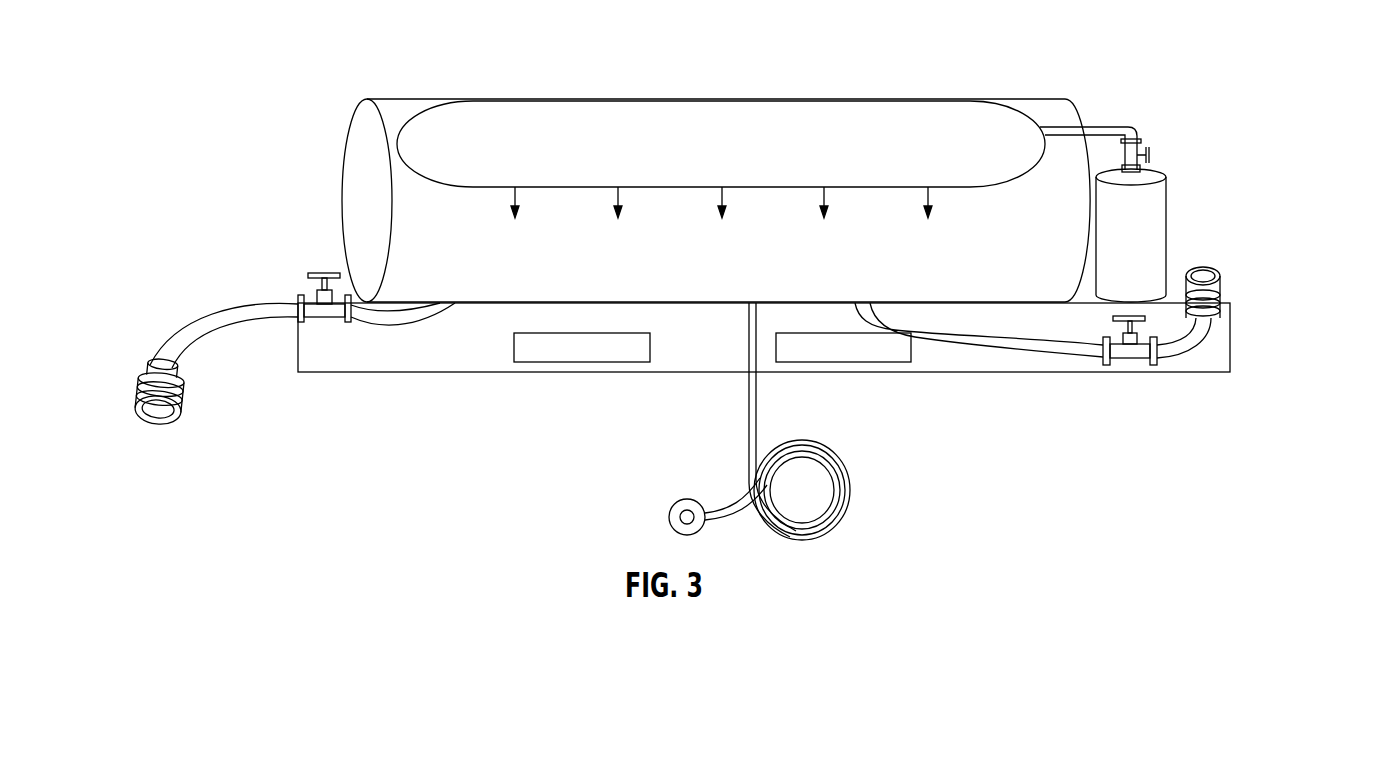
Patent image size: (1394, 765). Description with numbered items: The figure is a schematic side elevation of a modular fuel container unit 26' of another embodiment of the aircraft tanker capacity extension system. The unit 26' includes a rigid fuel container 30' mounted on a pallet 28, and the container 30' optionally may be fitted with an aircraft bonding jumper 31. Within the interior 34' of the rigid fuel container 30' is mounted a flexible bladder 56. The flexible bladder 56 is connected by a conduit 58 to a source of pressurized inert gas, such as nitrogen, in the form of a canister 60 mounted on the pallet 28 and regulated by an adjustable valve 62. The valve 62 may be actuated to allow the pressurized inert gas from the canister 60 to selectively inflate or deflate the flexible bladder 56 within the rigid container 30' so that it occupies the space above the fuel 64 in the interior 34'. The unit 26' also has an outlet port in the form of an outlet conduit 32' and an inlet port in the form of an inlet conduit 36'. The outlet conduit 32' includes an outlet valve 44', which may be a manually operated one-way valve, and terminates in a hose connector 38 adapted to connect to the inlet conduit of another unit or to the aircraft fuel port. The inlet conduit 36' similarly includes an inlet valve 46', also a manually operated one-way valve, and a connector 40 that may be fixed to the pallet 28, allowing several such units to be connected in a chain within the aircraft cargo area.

The modular fuel container unit 26' is at (1206, 184).
The pallet 28 is at (1222, 342).
The rigid fuel container 30' is at (721, 118).
The aircraft bonding jumper 31 is at (758, 423).
The outlet conduit 32' is at (224, 307).
The interior 34' is at (341, 200).
The inlet conduit 36' is at (1184, 370).
The hose connector 38 is at (142, 408).
The connector 40 is at (1217, 285).
The outlet valve 44' is at (365, 341).
The inlet valve 46' is at (1006, 363).
The flexible bladder 56 is at (858, 110).
The conduit 58 is at (1090, 123).
The canister 60 is at (1157, 200).
The adjustable valve 62 is at (1142, 150).
The fuel 64 is at (668, 232).